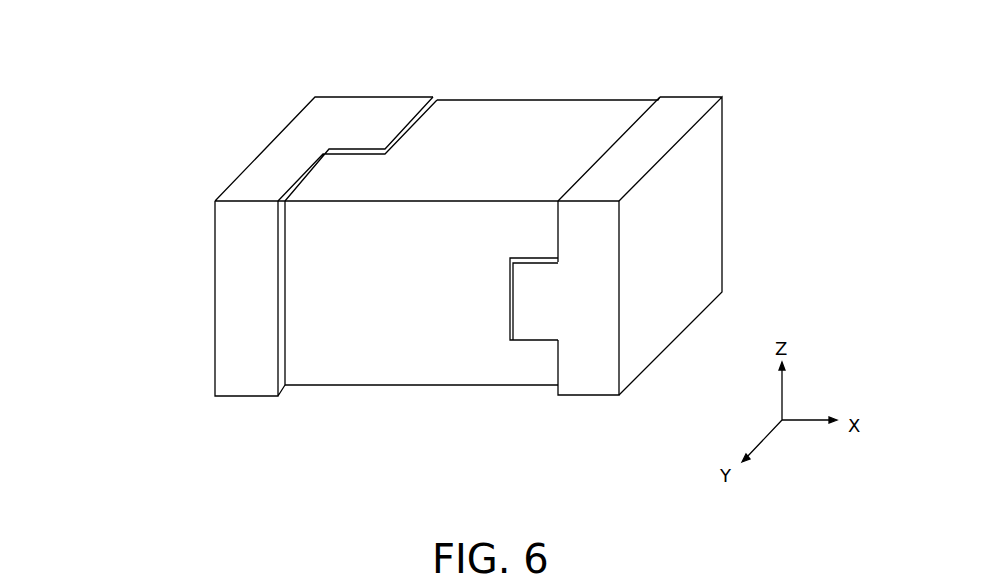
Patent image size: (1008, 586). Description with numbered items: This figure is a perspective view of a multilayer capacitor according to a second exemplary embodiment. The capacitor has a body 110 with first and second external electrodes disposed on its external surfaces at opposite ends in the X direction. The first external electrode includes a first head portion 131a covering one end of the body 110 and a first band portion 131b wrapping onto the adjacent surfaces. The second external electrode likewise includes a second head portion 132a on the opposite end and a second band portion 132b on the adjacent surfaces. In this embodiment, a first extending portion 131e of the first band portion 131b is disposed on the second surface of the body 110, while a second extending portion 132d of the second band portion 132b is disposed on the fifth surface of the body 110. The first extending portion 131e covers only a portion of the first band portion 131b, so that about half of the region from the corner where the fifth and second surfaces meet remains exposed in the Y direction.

The body 110 is at (510, 110).
The first head portion 131a is at (240, 273).
The first band portion 131b is at (275, 157).
The first extending portion 131e is at (367, 122).
The second head portion 132a is at (683, 225).
The second band portion 132b is at (583, 373).
The second extending portion 132d is at (532, 315).